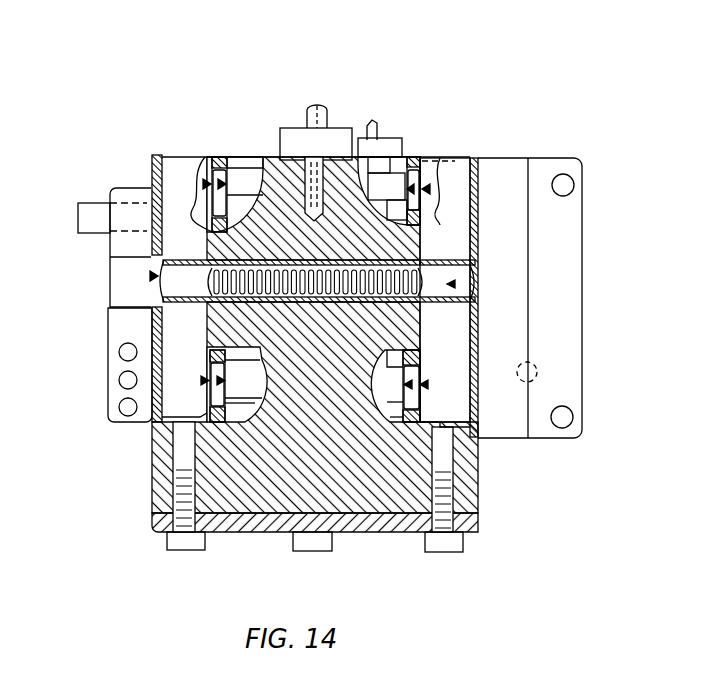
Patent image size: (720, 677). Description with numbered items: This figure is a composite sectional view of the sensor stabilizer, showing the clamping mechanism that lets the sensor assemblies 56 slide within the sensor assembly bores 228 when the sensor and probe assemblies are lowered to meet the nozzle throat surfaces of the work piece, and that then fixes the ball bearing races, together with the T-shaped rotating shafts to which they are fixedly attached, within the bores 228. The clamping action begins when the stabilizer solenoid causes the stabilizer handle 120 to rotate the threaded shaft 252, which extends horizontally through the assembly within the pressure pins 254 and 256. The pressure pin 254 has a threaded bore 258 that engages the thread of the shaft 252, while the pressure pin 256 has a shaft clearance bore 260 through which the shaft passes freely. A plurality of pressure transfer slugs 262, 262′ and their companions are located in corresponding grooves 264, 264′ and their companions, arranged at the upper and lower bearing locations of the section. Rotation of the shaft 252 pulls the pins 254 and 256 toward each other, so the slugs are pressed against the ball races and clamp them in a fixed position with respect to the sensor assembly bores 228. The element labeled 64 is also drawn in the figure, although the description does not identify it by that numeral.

The adjusting screw 64 is at (275, 130).
The sensor assembly 56 is at (420, 222).
The stabilizer handle 120 is at (110, 356).
The sensor assembly bore 228 is at (525, 437).
The threaded shaft 252 is at (421, 314).
The pressure pin 254 is at (442, 362).
The pressure pin 256 is at (153, 181).
The threaded bore 258 is at (436, 262).
The shaft clearance bore 260 is at (175, 257).
The pressure transfer slug 262 is at (205, 378).
The pressure transfer slug 262′ is at (215, 175).
The groove 264 is at (210, 411).
The groove 264′ is at (218, 168).